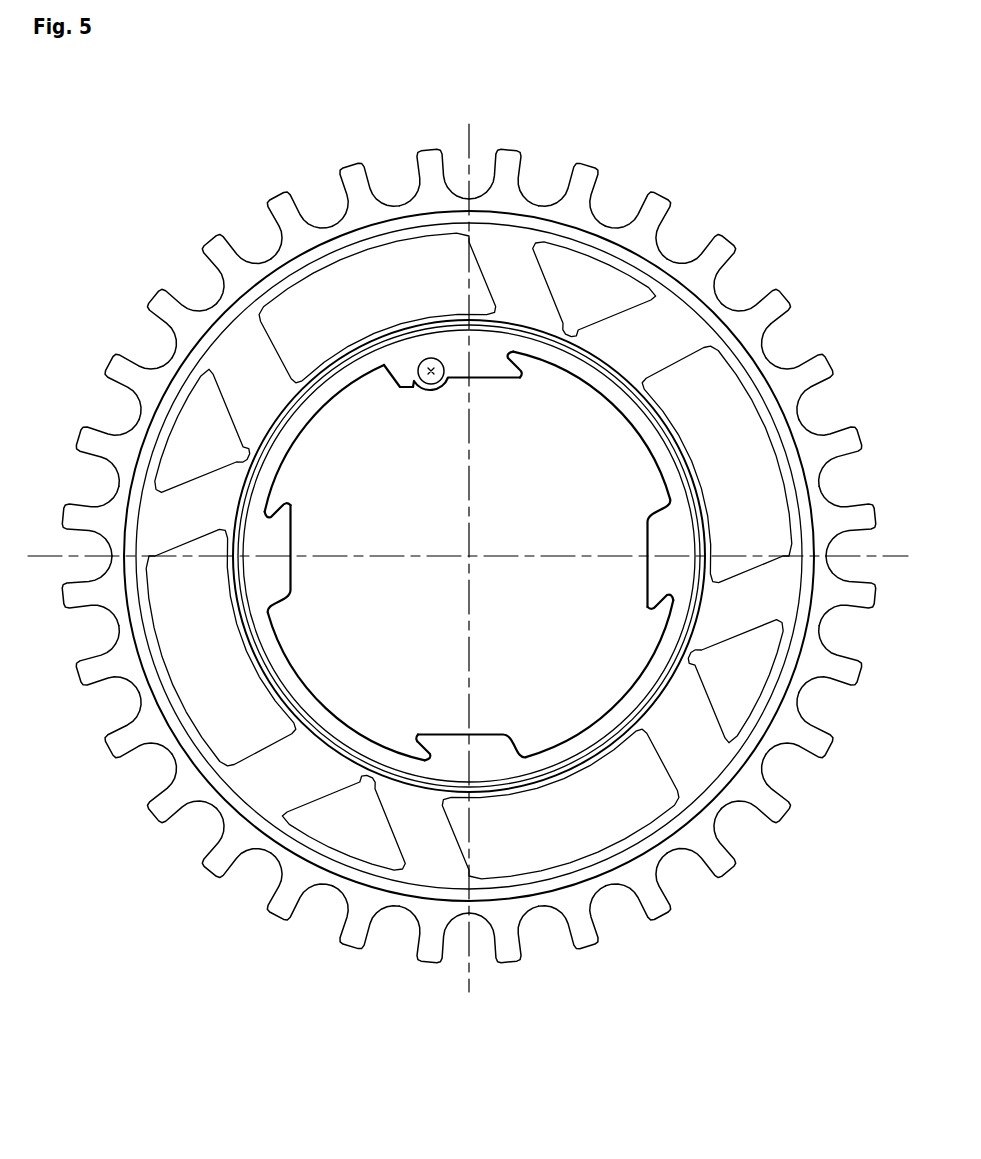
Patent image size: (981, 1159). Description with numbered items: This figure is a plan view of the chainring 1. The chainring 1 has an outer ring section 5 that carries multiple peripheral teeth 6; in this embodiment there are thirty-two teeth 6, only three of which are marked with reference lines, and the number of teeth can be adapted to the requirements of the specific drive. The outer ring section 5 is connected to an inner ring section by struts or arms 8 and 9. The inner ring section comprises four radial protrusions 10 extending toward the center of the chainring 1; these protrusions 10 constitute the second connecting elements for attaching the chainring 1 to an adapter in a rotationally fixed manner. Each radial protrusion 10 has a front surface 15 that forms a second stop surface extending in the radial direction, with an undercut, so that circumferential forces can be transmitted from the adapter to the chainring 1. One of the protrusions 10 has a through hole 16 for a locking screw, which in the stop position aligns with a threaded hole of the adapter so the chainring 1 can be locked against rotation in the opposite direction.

The chainring 1 is at (311, 186).
The outer ring section 5 is at (180, 380).
The peripheral teeth 6 is at (510, 148).
The struts or arms 8 is at (252, 357).
The struts or arms 9 is at (502, 276).
The radial protrusion 10 is at (665, 548).
The front surface 15 is at (656, 622).
The through hole 16 is at (436, 382).